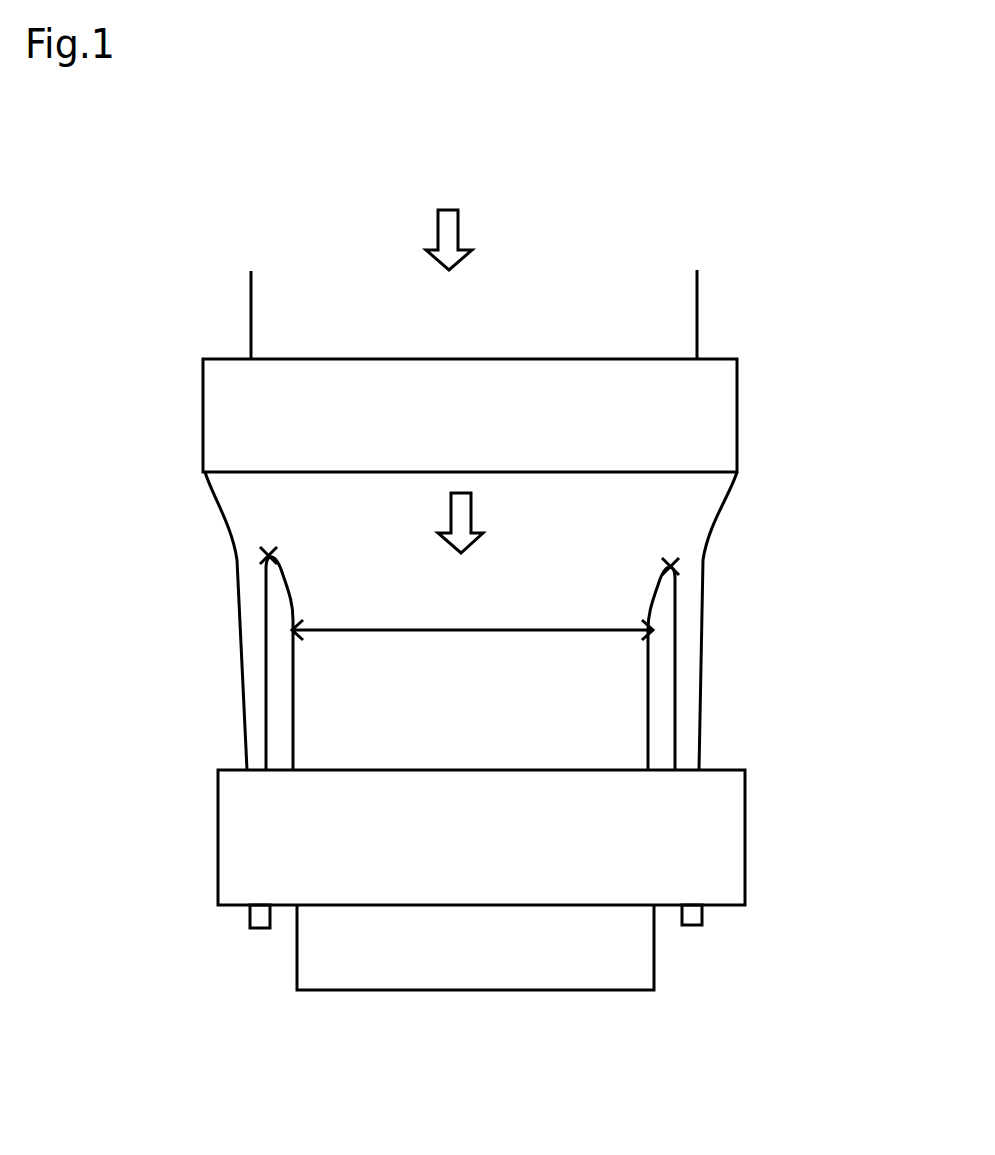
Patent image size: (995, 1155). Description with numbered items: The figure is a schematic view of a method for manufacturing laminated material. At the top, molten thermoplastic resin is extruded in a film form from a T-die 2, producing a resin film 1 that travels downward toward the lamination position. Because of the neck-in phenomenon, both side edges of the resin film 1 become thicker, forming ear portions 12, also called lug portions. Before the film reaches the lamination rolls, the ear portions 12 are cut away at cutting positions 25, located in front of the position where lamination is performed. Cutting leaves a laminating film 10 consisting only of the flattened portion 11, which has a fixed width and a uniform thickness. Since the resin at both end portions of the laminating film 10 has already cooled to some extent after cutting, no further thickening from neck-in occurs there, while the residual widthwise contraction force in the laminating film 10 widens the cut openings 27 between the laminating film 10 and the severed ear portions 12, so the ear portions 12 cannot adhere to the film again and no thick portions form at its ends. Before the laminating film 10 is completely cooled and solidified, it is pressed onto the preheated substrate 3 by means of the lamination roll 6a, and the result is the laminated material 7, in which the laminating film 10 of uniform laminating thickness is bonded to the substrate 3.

The resin film 1 is at (283, 500).
The T-die 2 is at (715, 428).
The substrate 3 is at (657, 321).
The lamination roll 6a is at (688, 838).
The laminated material 7 is at (623, 950).
The laminating film 10 is at (528, 708).
The flattened portion 11 is at (353, 630).
The ear portion 12 is at (252, 638).
The cutting position 25 is at (268, 556).
The cut opening 27 is at (280, 662).